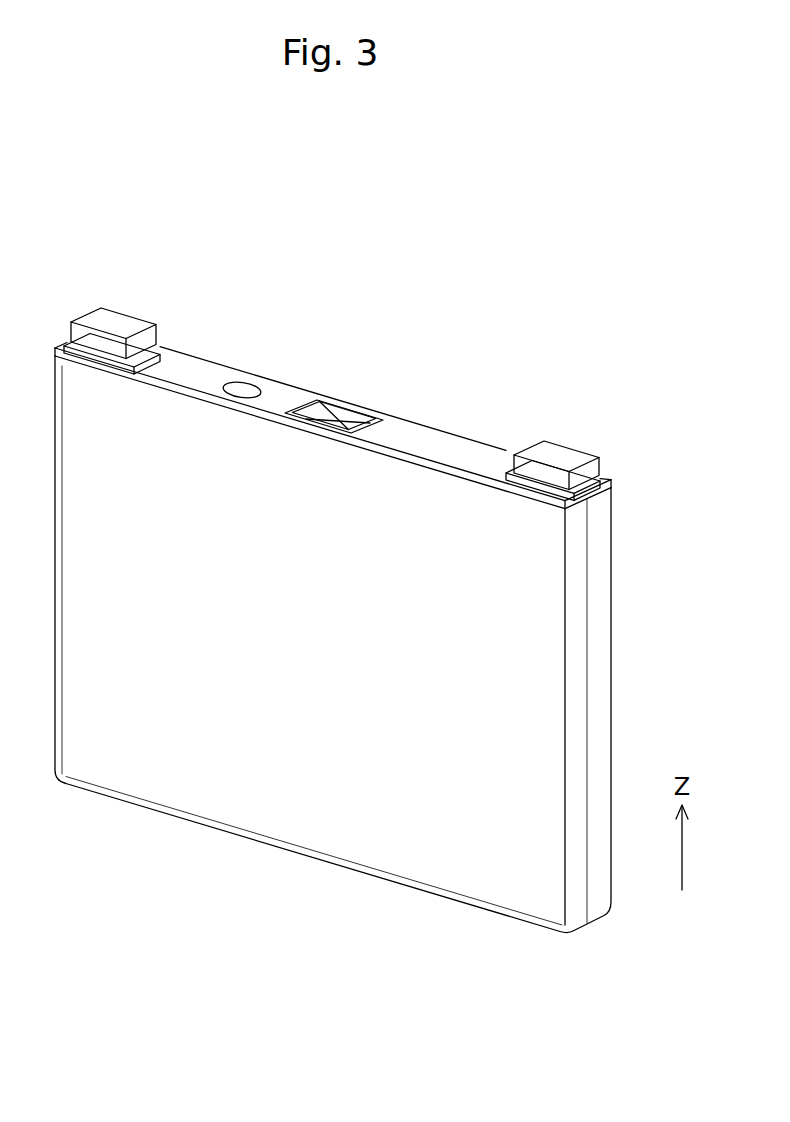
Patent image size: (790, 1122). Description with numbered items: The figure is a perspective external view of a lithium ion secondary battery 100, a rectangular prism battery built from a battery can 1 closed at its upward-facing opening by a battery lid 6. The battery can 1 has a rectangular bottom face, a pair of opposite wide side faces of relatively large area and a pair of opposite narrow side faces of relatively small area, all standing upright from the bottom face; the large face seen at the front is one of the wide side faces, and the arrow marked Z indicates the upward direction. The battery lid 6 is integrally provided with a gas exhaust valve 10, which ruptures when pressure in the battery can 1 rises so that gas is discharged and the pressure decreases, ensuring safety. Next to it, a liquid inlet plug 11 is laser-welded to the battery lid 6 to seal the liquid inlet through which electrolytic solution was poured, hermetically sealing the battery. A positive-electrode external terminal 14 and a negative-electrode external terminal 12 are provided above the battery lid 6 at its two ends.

The lithium ion secondary battery 100 is at (508, 286).
The battery can 1 is at (278, 823).
The battery lid 6 is at (432, 440).
The gas exhaust valve 10 is at (312, 404).
The liquid inlet plug 11 is at (243, 384).
The negative-electrode external terminal 12 is at (578, 446).
The positive-electrode external terminal 14 is at (118, 318).